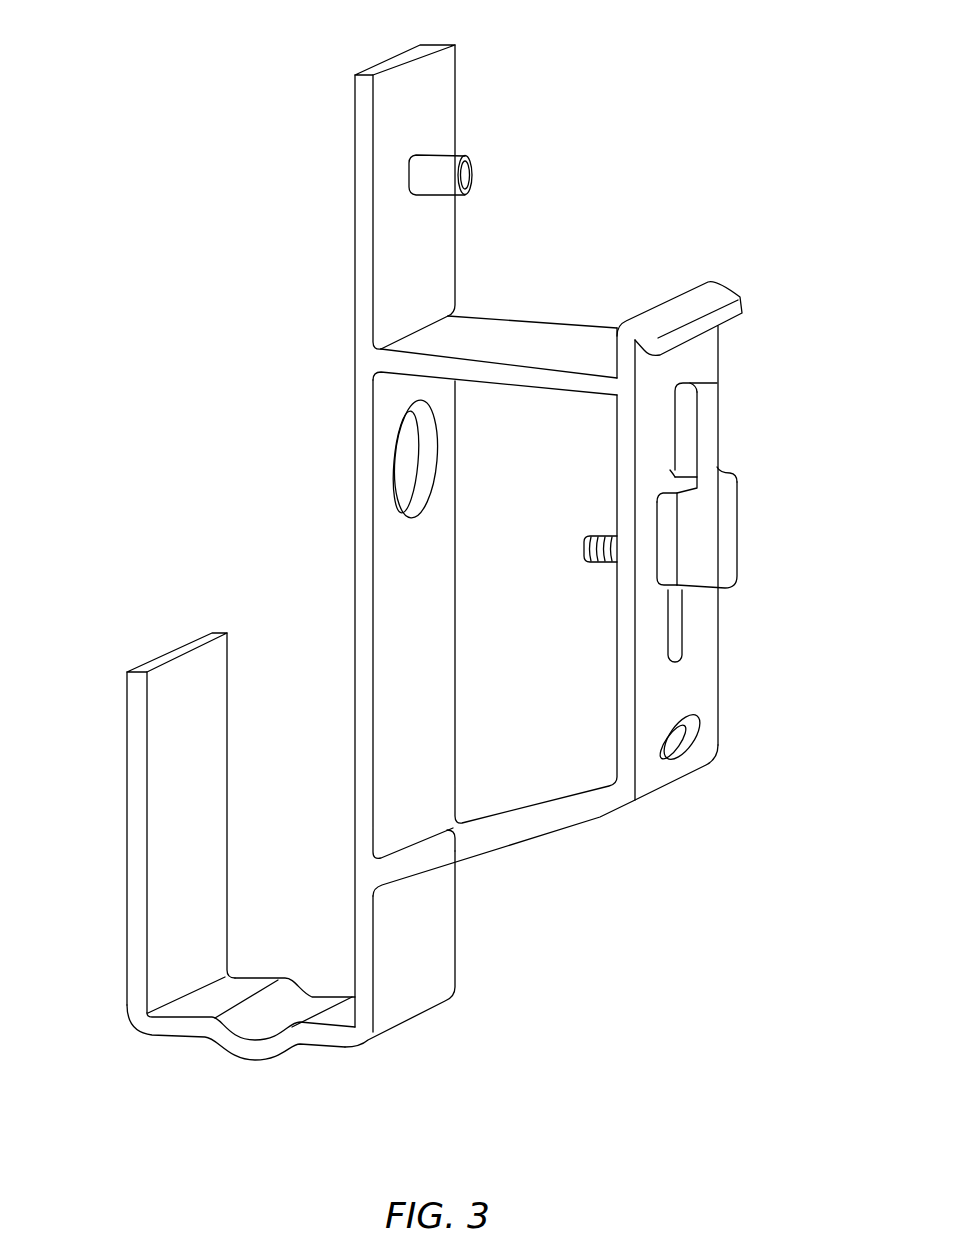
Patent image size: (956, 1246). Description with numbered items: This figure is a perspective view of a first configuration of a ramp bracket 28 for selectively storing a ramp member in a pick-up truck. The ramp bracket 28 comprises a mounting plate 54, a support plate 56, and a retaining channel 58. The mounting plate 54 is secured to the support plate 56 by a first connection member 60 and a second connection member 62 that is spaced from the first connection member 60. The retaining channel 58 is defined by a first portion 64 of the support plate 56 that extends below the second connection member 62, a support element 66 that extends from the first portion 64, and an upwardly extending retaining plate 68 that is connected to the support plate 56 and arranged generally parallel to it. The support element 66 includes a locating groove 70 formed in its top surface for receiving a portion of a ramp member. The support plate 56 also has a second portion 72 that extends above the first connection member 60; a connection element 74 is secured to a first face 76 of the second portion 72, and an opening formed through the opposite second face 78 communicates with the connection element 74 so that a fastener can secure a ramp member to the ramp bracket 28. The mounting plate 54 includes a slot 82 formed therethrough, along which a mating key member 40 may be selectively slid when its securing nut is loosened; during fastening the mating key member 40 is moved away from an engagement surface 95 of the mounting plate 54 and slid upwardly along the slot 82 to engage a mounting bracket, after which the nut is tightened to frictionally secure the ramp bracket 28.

The ramp bracket 28 is at (662, 160).
The mating key member 40 is at (745, 513).
The mounting plate 54 is at (705, 688).
The support plate 56 is at (432, 695).
The retaining channel 58 is at (285, 698).
The first connection member 60 is at (530, 345).
The second connection member 62 is at (525, 828).
The first portion of the support plate 64 is at (435, 947).
The support element 66 is at (238, 985).
The retaining plate 68 is at (196, 836).
The locating groove 70 is at (268, 1015).
The second portion of the support plate 72 is at (430, 92).
The connection element 74 is at (453, 172).
The first face 76 is at (425, 286).
The second face 78 is at (347, 220).
The slot 82 is at (675, 636).
The engagement surface 95 is at (686, 710).